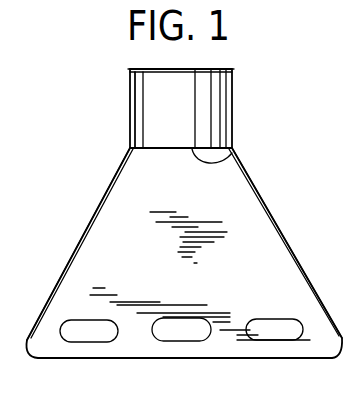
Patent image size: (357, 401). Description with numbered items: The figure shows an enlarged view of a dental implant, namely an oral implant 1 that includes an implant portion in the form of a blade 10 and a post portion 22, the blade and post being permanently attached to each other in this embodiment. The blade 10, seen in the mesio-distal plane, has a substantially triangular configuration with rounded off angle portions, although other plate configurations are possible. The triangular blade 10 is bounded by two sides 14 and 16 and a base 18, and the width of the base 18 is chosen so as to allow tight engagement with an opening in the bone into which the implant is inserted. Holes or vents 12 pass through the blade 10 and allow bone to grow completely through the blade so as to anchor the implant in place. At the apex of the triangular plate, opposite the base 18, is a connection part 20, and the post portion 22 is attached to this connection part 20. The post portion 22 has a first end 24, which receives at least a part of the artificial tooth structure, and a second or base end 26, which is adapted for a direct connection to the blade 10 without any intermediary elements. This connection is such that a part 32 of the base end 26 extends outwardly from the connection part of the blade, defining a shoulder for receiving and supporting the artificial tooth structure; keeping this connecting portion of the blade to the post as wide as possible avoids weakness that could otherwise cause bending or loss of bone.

The oral implant 1 is at (86, 107).
The blade 10 is at (250, 267).
The holes or vents 12 is at (100, 321).
The side 14 is at (273, 220).
The side 16 is at (90, 222).
The base 18 is at (287, 358).
The connection part 20 is at (163, 160).
The post portion 22 is at (205, 97).
The first end 24 is at (155, 69).
The base end 26 is at (153, 127).
The part of the base end 32 is at (232, 153).